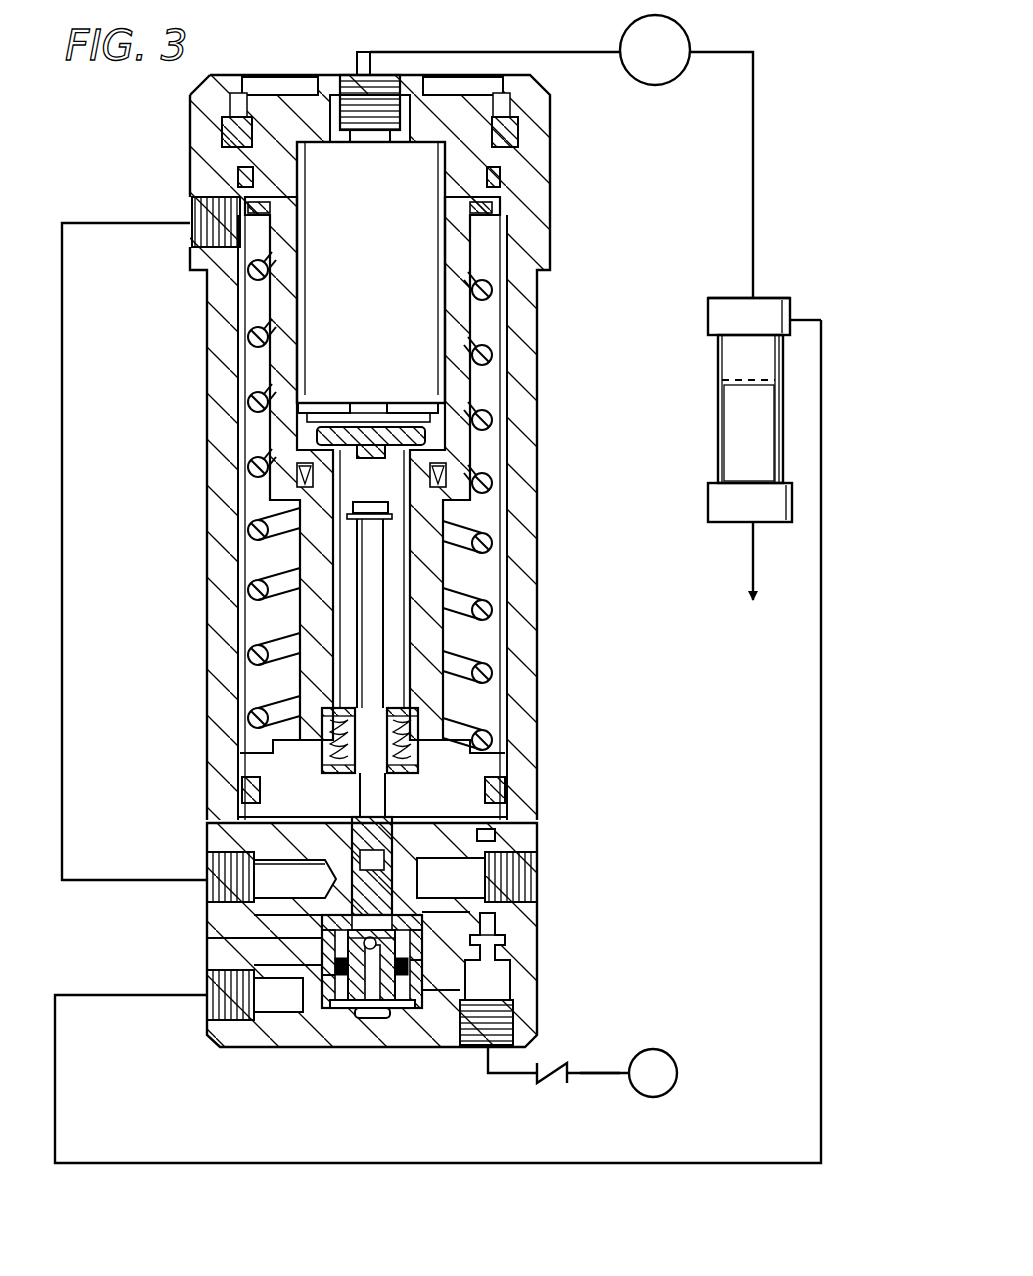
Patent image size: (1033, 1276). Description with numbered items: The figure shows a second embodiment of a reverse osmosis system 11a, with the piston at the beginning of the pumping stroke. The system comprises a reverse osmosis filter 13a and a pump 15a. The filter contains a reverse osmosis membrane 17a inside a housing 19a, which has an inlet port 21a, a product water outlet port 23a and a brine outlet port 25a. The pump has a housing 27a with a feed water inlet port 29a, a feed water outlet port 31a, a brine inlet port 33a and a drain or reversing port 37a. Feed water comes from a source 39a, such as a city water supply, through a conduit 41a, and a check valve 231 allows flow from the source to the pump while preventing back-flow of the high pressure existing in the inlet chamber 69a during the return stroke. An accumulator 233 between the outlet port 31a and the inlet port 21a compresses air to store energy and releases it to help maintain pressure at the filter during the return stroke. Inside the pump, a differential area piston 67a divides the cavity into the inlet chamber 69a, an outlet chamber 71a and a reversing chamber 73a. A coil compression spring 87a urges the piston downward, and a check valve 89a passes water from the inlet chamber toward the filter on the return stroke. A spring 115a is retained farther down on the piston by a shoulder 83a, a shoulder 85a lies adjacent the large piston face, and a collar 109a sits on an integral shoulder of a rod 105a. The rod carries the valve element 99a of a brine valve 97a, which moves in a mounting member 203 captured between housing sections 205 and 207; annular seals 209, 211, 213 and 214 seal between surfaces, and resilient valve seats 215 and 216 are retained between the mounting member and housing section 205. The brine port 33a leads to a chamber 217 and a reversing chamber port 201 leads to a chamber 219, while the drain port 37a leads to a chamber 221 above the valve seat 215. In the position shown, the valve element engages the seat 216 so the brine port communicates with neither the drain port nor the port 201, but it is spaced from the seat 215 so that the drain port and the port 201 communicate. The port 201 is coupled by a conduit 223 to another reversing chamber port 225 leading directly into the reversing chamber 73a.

The reverse osmosis system 11a is at (165, 195).
The reverse osmosis filter 13a is at (705, 472).
The pump 15a is at (556, 432).
The reverse osmosis membrane 17a is at (735, 380).
The housing 19a is at (723, 425).
The inlet port 21a is at (750, 298).
The product water outlet port 23a is at (750, 525).
The brine outlet port 25a is at (788, 298).
The housing 27a is at (543, 805).
The feed water inlet port 29a is at (515, 1022).
The feed water outlet port 31a is at (368, 52).
The brine inlet port 33a is at (212, 1005).
The drain port 37a is at (530, 880).
The source 39a is at (658, 1050).
The conduit 41a is at (600, 1075).
The piston 67a is at (448, 652).
The inlet chamber 69a is at (495, 835).
The outlet chamber 71a is at (380, 214).
The reversing chamber 73a is at (247, 295).
The shoulder 83a is at (322, 706).
The shoulder 85a is at (505, 785).
The coil compression spring 87a is at (493, 293).
The check valve 89a is at (392, 440).
The brine valve 97a is at (400, 1012).
The valve element 99a is at (355, 1005).
The rod 105a is at (365, 578).
The collar 109a is at (250, 780).
The spring 115a is at (420, 730).
The reversing chamber port 201 is at (205, 862).
The mounting member 203 is at (330, 1005).
The housing section 205 is at (515, 915).
The housing section 207 is at (530, 980).
The annular seal 209 is at (300, 940).
The annular seal 211 is at (310, 965).
The annular seal 213 is at (385, 1010).
The annular seal 214 is at (512, 945).
The valve seat 215 is at (436, 880).
The valve seat 216 is at (420, 1012).
The chamber 217 is at (340, 1010).
The chamber 219 is at (300, 915).
The chamber 221 is at (455, 856).
The conduit 223 is at (66, 442).
The reversing chamber port 225 is at (192, 222).
The check valve 231 is at (545, 1085).
The accumulator 233 is at (638, 68).